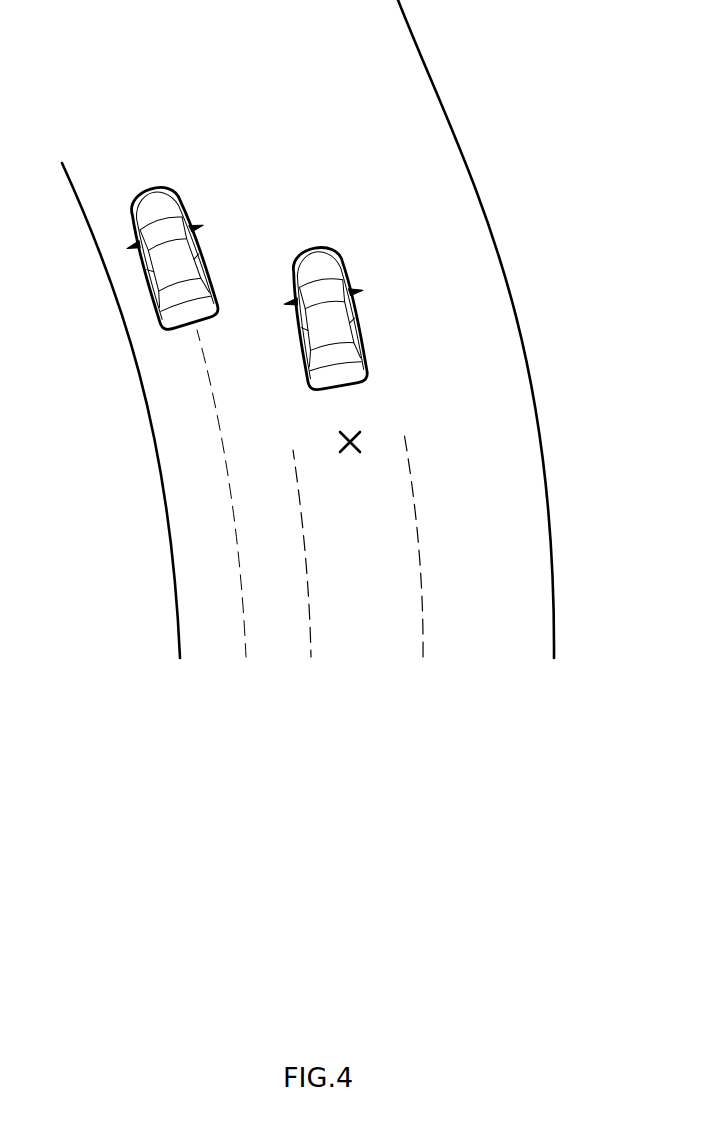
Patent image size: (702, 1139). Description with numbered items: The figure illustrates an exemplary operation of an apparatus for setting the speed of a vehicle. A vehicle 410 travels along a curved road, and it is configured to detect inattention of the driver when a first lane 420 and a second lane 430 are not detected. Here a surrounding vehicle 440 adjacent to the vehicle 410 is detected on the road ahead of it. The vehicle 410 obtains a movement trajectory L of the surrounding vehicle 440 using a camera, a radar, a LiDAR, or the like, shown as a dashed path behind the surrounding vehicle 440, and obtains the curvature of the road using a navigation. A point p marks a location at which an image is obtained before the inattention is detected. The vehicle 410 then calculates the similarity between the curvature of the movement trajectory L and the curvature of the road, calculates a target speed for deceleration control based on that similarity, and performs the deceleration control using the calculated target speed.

The vehicle 410 is at (356, 312).
The surrounding vehicle 440 is at (202, 244).
The first lane 420 is at (310, 635).
The second lane 430 is at (423, 635).
The movement trajectory L is at (245, 635).
The point p is at (350, 435).